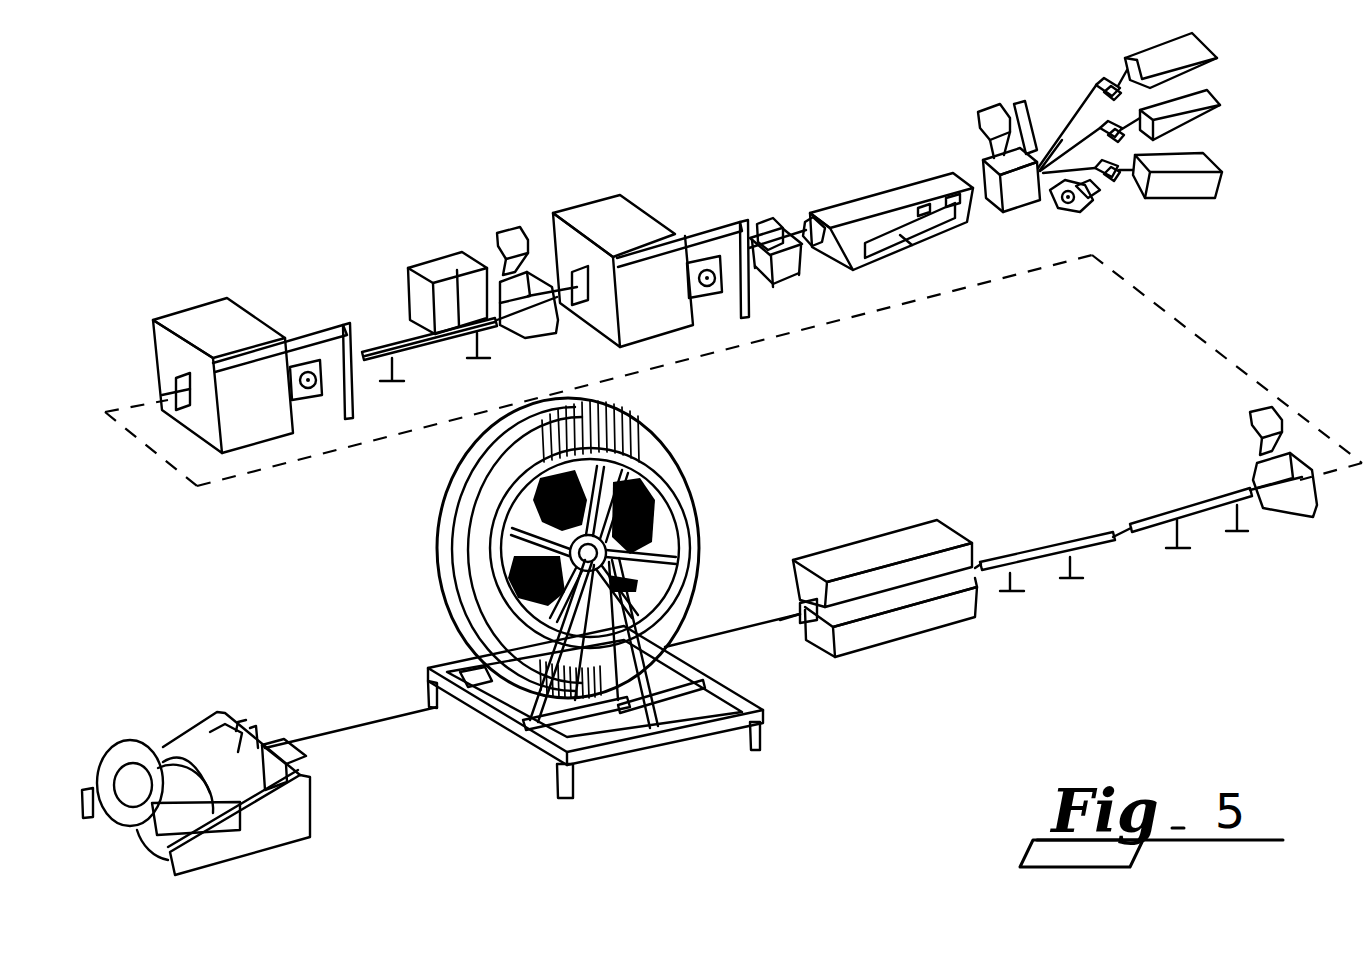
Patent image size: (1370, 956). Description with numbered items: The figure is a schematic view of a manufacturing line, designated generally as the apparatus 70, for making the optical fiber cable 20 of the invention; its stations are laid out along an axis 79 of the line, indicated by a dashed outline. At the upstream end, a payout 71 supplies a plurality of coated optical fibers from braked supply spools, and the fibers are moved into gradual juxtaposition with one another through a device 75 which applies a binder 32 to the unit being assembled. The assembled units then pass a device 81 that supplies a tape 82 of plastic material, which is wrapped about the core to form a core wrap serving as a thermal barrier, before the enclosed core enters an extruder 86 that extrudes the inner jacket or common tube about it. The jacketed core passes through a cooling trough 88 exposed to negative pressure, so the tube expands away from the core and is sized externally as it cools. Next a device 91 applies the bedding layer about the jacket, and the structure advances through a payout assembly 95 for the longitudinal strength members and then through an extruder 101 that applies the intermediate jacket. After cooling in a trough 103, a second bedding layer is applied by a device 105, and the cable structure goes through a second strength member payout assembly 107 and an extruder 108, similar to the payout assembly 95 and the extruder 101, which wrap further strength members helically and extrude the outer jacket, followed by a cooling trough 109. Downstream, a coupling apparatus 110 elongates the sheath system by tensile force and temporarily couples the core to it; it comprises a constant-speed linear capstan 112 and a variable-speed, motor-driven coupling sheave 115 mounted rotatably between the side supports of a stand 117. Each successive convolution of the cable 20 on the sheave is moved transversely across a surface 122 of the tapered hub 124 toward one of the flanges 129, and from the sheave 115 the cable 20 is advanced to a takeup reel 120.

The cable 20 is at (340, 699).
The binder 32 is at (1093, 92).
The apparatus 70 is at (762, 128).
The payout 71 is at (1200, 60).
The device 75 is at (1103, 80).
The axis 79 is at (112, 407).
The device 81 is at (1090, 217).
The tape 82 is at (1032, 205).
The extruder 86 is at (987, 157).
The cooling trough 88 is at (847, 207).
The device 91 is at (710, 295).
The payout assembly 95 is at (640, 218).
The extruder 101 is at (540, 333).
The trough 103 is at (433, 340).
The device 105 is at (313, 400).
The second strength member payout assembly 107 is at (253, 430).
The extruder 108 is at (1300, 513).
The cooling trough 109 is at (1160, 507).
The apparatus 110 is at (666, 684).
The linear capstan 112 is at (920, 630).
The coupling sheave 115 is at (574, 539).
The stand 117 is at (737, 697).
The takeup reel 120 is at (293, 820).
The surface 122 is at (467, 520).
The hub 124 is at (452, 570).
The flange 129 is at (597, 407).